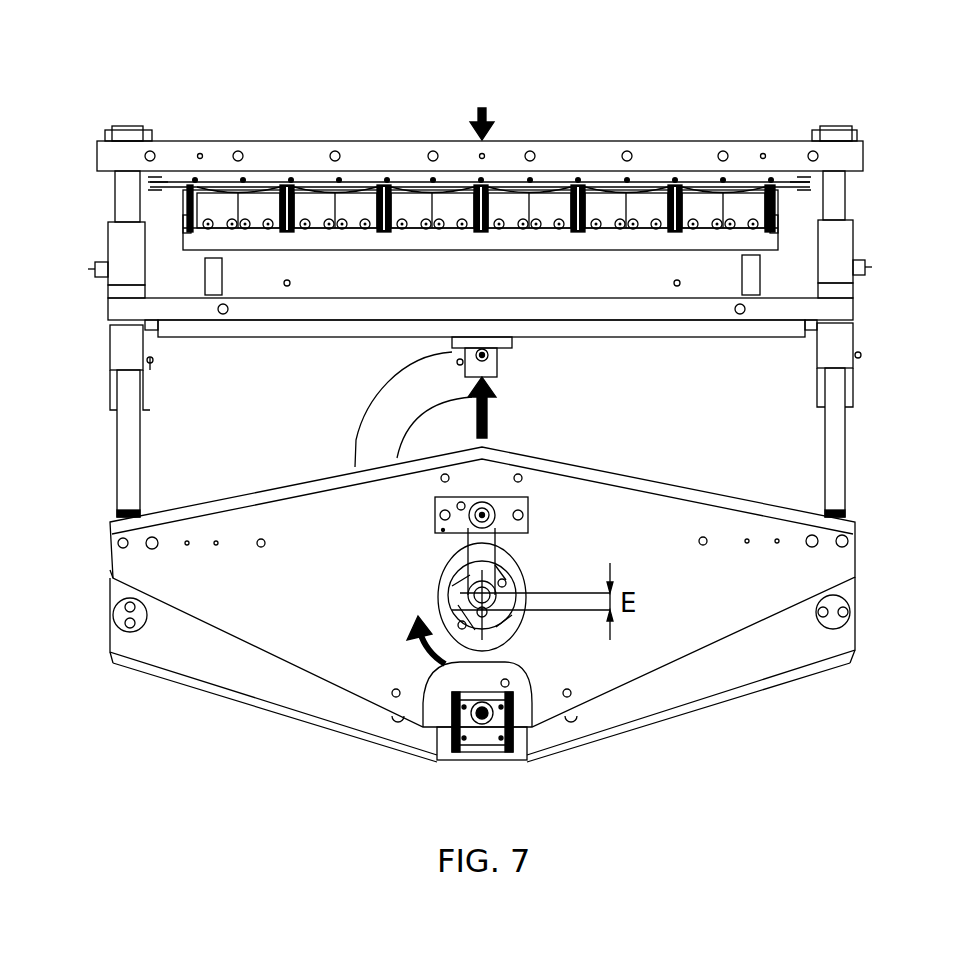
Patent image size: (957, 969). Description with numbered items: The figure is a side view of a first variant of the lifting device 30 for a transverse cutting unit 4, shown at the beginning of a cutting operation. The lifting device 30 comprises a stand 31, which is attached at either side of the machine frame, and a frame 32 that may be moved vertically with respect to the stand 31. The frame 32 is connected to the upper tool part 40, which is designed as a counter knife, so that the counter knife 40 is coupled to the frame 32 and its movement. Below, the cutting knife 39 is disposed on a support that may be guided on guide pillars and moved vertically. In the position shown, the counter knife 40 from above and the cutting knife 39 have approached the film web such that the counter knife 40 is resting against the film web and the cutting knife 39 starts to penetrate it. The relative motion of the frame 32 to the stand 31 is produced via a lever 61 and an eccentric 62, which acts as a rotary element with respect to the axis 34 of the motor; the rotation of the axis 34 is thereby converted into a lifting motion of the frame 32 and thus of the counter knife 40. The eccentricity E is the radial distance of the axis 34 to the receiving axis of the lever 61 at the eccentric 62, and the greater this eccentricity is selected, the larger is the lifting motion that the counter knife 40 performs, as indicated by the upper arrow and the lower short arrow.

The lifting device 30 is at (889, 127).
The upper tool part 40 is at (603, 148).
The cutting knife 39 is at (743, 205).
The transverse cutting unit 4 is at (870, 431).
The stand 31 is at (825, 560).
The frame 32 is at (798, 647).
The axis 34 is at (448, 622).
The lever 61 is at (482, 556).
The eccentric 62 is at (488, 618).